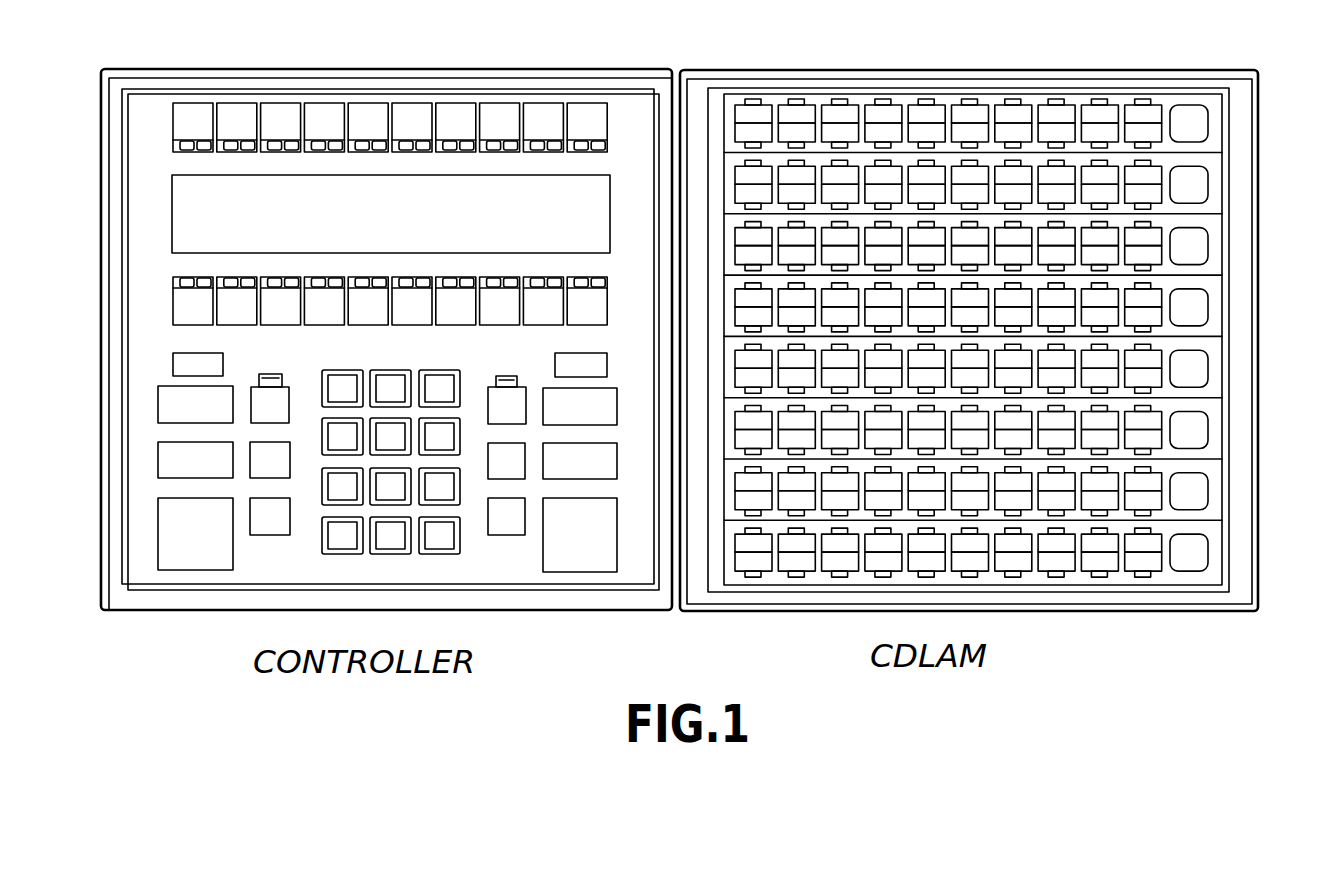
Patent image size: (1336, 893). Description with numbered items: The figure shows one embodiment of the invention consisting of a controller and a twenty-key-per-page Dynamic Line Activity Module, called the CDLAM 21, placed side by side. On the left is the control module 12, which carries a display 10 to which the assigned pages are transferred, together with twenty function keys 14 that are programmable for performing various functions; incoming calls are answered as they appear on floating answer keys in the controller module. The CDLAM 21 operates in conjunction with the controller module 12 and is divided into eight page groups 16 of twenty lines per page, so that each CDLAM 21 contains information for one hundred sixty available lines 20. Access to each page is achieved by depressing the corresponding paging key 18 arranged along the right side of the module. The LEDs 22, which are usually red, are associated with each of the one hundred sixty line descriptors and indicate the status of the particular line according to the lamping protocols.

The display 10 is at (183, 218).
The control module 12 is at (178, 599).
The function keys 14 is at (328, 108).
The page groups 16 is at (1215, 232).
The paging key 18 is at (1192, 180).
The available lines 20 is at (743, 113).
The CDLAM 21 is at (786, 597).
The LEDs 22 is at (797, 100).